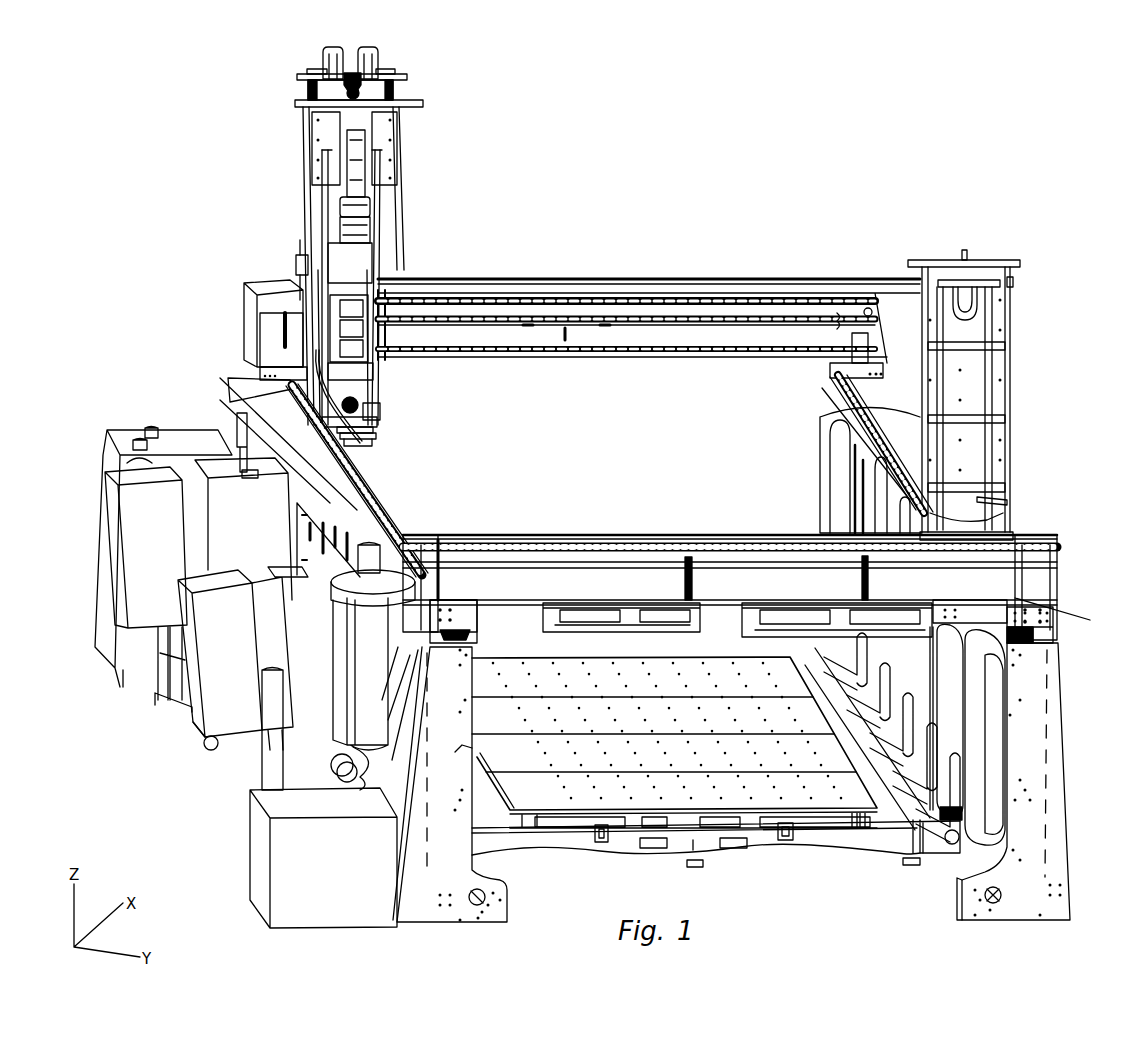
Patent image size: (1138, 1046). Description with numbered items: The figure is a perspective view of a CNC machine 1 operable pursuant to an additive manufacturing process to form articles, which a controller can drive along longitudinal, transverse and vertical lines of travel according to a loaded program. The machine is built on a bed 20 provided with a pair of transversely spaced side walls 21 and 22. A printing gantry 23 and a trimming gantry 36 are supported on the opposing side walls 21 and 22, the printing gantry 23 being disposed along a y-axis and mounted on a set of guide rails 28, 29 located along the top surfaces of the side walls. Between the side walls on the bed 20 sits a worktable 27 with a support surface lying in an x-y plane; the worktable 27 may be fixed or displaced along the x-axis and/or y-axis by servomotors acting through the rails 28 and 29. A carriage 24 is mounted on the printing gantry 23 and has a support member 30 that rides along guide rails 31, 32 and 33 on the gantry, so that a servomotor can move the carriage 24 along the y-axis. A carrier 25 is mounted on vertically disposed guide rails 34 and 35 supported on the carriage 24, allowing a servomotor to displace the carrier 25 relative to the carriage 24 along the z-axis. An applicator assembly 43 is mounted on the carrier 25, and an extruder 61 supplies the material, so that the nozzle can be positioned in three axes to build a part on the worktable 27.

The CNC machine 1 is at (613, 487).
The bed 20 is at (620, 843).
The side wall 21 is at (456, 764).
The side wall 22 is at (1060, 769).
The printing gantry 23 is at (649, 287).
The carriage 24 is at (302, 234).
The carrier 25 is at (403, 168).
The worktable 27 is at (647, 742).
The guide rail 28 is at (382, 508).
The guide rail 29 is at (850, 408).
The support member 30 is at (297, 261).
The guide rail 31 is at (670, 278).
The guide rail 32 is at (597, 279).
The guide rail 33 is at (627, 352).
The guide rail 34 is at (366, 437).
The guide rail 35 is at (376, 355).
The trimming gantry 36 is at (1022, 540).
The applicator assembly 43 is at (371, 439).
The extruder 61 is at (367, 268).